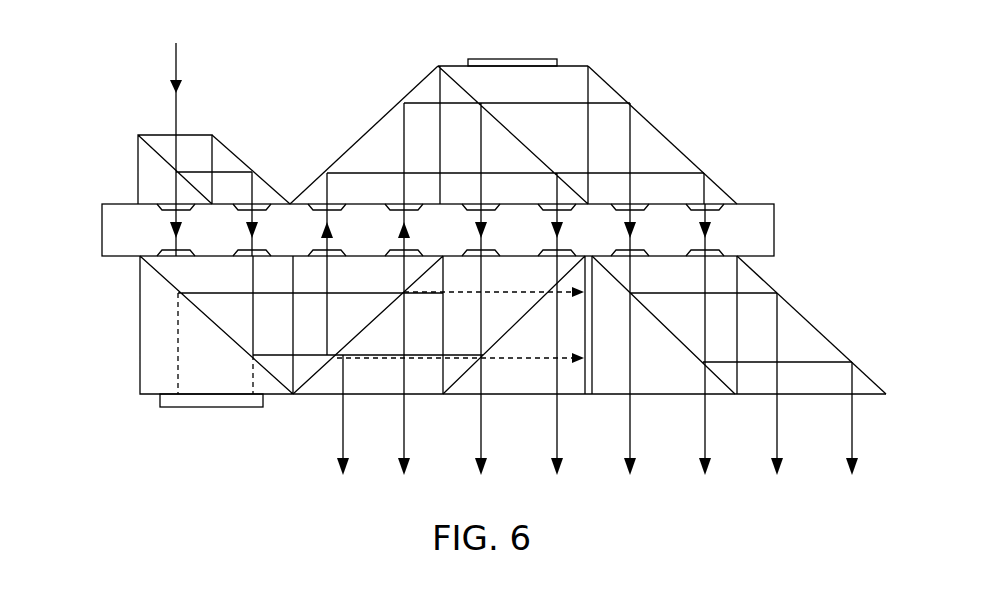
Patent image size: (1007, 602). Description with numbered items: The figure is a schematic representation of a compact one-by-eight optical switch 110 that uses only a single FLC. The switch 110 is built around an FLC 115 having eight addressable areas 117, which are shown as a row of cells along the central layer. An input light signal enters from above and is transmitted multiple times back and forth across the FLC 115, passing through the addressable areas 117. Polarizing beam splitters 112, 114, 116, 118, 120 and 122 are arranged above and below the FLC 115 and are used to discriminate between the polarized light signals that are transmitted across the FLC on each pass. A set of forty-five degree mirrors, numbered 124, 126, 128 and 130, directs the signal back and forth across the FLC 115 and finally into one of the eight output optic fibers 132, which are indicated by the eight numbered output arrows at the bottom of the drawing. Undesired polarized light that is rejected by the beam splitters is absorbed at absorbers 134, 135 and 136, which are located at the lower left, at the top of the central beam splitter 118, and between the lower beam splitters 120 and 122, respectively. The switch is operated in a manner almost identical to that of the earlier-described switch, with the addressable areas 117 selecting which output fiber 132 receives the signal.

The optical switch 110 is at (709, 86).
The polarizing beam splitter 112 is at (138, 160).
The polarizing beam splitter 114 is at (245, 350).
The FLC 115 is at (102, 246).
The polarizing beam splitter 116 is at (382, 314).
The addressable areas 117 is at (166, 208).
The polarizing beam splitter 118 is at (545, 95).
The polarizing beam splitter 120 is at (498, 342).
The polarizing beam splitter 122 is at (686, 370).
The 45° mirror 124 is at (237, 157).
The 45° mirror 126 is at (378, 122).
The 45° mirror 128 is at (684, 158).
The 45° mirror 130 is at (808, 322).
The output optic fibers 132 is at (343, 450).
The absorber 134 is at (152, 403).
The absorber 135 is at (500, 58).
The absorber 136 is at (598, 378).